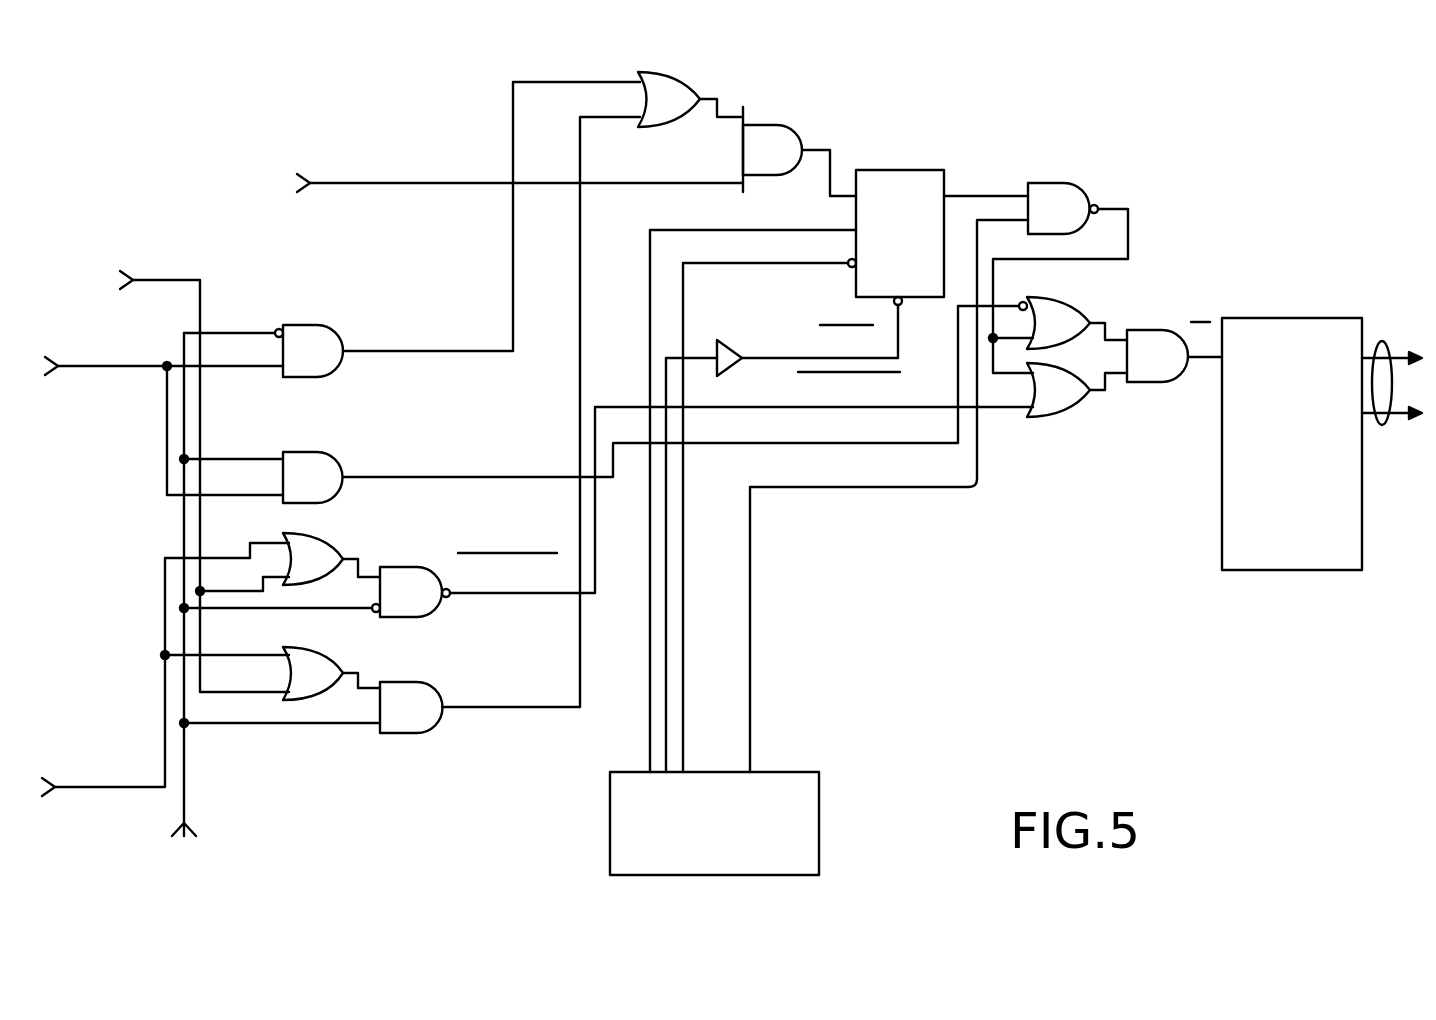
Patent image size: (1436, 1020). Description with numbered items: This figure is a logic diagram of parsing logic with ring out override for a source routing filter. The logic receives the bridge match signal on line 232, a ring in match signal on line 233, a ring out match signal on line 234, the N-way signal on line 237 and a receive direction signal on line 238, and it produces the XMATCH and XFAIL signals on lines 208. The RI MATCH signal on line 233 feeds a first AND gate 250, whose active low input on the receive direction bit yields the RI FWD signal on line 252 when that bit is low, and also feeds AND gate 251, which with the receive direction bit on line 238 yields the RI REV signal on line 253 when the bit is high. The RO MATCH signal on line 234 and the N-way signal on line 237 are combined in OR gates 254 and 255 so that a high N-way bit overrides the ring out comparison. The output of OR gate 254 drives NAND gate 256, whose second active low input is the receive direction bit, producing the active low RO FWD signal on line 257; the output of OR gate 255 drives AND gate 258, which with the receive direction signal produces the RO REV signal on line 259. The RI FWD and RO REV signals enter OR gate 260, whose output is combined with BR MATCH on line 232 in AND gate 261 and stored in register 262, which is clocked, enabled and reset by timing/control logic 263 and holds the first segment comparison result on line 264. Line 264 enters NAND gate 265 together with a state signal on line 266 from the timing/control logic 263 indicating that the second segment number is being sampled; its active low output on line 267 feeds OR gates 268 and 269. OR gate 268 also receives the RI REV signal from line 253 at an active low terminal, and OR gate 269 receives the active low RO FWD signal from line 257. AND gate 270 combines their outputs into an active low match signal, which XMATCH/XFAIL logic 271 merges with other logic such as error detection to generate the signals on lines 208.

The XMATCH and XFAIL signal lines 208 is at (1388, 341).
The bridge match signal line 232 is at (353, 183).
The ring in match signal line 233 is at (126, 367).
The ring out match signal line 234 is at (120, 787).
The N-way signal line 237 is at (157, 280).
The receive direction signal line 238 is at (186, 808).
The first AND gate 250 is at (304, 326).
The AND gate 251 is at (304, 452).
The RI FWD signal line 252 is at (437, 352).
The RI REV signal line 253 is at (483, 478).
The OR gate 254 is at (305, 533).
The OR gate 255 is at (302, 647).
The NAND gate 256 is at (398, 567).
The RO FWD signal line 257 is at (493, 593).
The AND gate 258 is at (398, 682).
The RO REV signal line 259 is at (488, 707).
The OR gate 260 is at (676, 72).
The AND gate 261 is at (772, 125).
The register 262 is at (897, 170).
The timing/control logic 263 is at (793, 772).
The register output line 264 is at (985, 196).
The NAND gate 265 is at (1074, 183).
The state signal line 266 is at (985, 487).
The NAND gate output line 267 is at (1128, 230).
The OR gate 268 is at (1055, 297).
The OR gate 269 is at (1041, 417).
The AND gate 270 is at (1170, 382).
The XMATCH/XFAIL logic 271 is at (1295, 318).